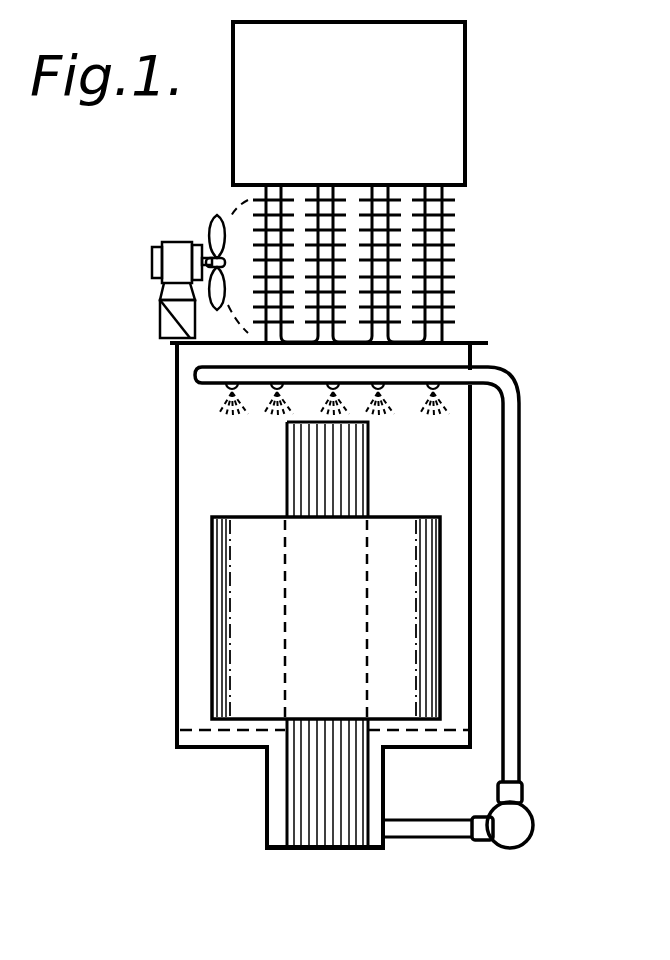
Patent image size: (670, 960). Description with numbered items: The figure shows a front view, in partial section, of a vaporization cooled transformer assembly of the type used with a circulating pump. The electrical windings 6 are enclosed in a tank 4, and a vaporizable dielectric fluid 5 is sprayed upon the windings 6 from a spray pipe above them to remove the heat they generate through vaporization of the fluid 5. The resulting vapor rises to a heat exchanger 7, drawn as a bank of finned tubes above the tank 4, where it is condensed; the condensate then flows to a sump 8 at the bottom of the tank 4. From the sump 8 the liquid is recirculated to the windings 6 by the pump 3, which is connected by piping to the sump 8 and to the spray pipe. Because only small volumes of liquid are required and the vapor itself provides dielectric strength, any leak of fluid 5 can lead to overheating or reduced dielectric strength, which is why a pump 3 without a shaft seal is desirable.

The pump 3 is at (526, 830).
The tank 4 is at (176, 546).
The vaporizable dielectric fluid 5 is at (213, 398).
The electrical windings 6 is at (273, 532).
The heat exchanger 7 is at (442, 254).
The sump 8 is at (372, 851).